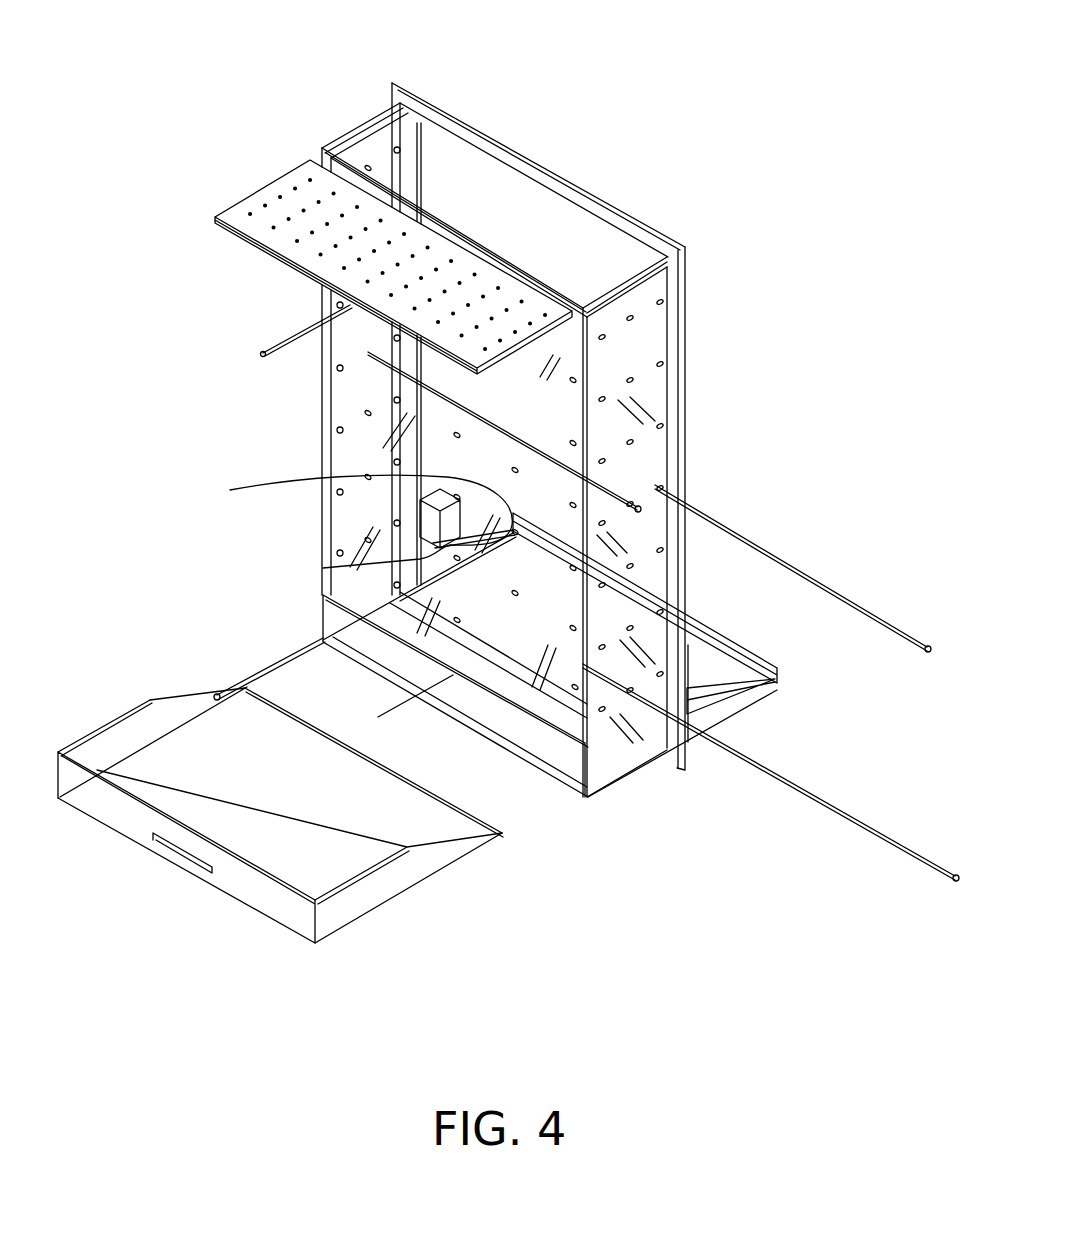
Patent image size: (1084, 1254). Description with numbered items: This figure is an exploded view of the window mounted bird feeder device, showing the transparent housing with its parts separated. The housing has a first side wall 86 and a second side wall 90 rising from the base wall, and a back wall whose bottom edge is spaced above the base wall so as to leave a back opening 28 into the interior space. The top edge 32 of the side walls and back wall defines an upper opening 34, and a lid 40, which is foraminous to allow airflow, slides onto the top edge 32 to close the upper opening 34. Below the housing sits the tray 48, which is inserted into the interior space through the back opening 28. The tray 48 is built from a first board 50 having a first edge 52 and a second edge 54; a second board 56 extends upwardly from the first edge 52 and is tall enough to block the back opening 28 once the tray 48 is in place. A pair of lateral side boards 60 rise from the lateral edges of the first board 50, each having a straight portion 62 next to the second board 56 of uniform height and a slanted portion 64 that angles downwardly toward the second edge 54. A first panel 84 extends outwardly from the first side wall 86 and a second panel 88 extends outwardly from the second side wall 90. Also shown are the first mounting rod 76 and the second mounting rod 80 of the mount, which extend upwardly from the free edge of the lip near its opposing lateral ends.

The back opening 28 is at (584, 751).
The top edge 32 is at (343, 142).
The upper opening 34 is at (593, 267).
The lid 40 is at (238, 220).
The tray 48 is at (341, 828).
The first board 50 is at (452, 822).
The first edge 52 is at (300, 943).
The second edge 54 is at (420, 783).
The second board 56 is at (105, 797).
The lateral side boards 60 is at (137, 700).
The straight portion 62 is at (108, 747).
The slanted portion 64 is at (200, 698).
The first mounting rod 76 is at (355, 521).
The second mounting rod 80 is at (778, 678).
The first panel 84 is at (323, 568).
The first side wall 86 is at (365, 393).
The second panel 88 is at (727, 698).
The second side wall 90 is at (647, 450).